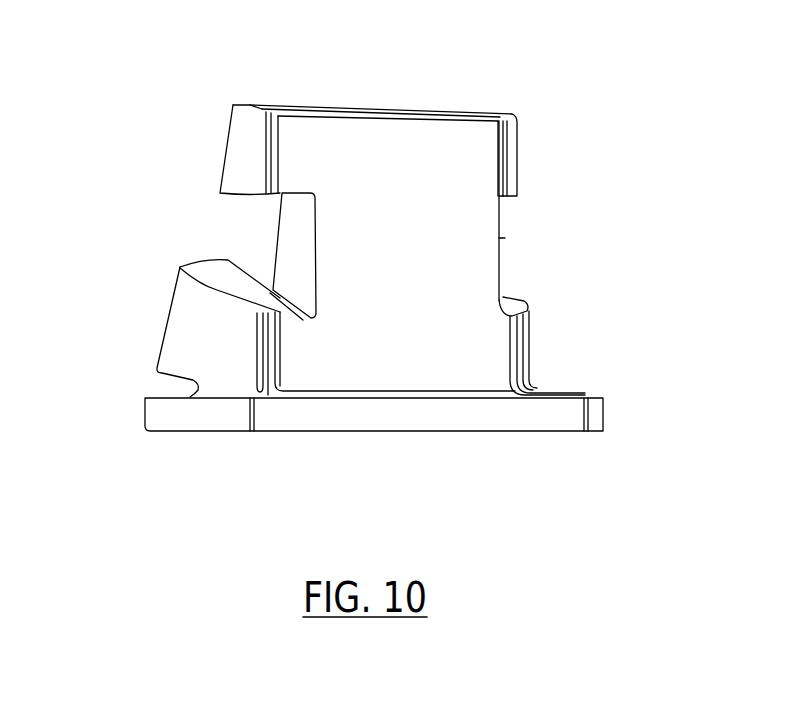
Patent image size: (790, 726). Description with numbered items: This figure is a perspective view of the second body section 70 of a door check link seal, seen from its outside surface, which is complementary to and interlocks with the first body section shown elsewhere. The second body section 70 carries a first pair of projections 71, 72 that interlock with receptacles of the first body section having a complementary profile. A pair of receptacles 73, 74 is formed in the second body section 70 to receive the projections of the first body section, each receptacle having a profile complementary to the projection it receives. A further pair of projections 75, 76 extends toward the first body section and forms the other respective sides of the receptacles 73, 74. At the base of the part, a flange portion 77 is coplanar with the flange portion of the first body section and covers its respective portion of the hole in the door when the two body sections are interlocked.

The second body section 70 is at (368, 465).
The projection 71 is at (176, 334).
The projection 72 is at (510, 300).
The receptacle 73 is at (240, 240).
The receptacle 74 is at (500, 238).
The projection 75 is at (250, 106).
The projection 76 is at (507, 114).
The flange portion 77 is at (582, 423).